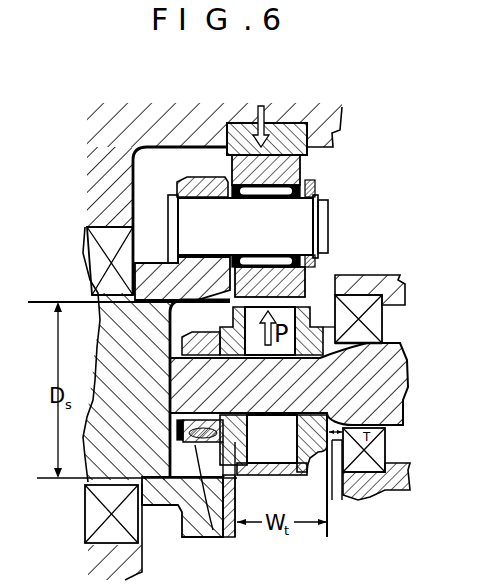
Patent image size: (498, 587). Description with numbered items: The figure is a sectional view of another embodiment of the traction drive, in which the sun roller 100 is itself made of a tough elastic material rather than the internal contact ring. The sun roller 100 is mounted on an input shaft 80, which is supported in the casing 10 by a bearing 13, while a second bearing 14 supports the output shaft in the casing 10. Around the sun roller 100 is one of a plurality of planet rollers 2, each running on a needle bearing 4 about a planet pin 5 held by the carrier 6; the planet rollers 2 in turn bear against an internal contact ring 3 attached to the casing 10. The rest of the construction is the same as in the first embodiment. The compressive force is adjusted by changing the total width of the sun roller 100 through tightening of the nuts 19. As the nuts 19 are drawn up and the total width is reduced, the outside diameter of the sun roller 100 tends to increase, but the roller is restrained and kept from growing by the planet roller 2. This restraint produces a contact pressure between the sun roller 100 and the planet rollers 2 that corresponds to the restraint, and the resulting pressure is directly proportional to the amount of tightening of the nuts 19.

The planet roller 2 is at (297, 161).
The internal contact ring 3 is at (296, 124).
The needle bearing 4 is at (253, 195).
The planet pin 5 is at (305, 232).
The carrier 6 is at (178, 189).
The casing 10 is at (186, 125).
The bearing 13 is at (363, 463).
The bearing 14 is at (130, 527).
The nuts 19 is at (215, 537).
The input shaft 80 is at (367, 397).
The sun roller 100 is at (312, 456).